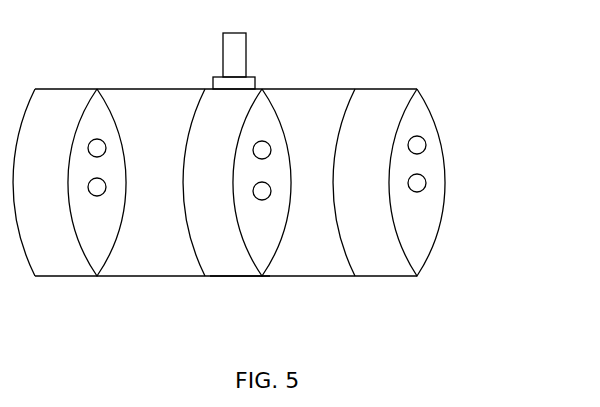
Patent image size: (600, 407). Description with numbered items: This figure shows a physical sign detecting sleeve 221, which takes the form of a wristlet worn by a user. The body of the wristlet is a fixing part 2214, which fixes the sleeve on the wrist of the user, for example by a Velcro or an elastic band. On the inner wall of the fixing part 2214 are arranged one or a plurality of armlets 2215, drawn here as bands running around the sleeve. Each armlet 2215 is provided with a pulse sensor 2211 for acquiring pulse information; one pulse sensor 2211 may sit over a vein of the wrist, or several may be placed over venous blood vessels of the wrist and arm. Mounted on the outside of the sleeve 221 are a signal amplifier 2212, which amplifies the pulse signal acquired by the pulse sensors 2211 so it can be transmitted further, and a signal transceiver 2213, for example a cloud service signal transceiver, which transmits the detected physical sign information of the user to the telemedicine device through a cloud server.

The physical sign detecting sleeve 221 is at (367, 80).
The pulse sensor 2211 is at (418, 181).
The signal amplifier 2212 is at (213, 85).
The signal transceiver 2213 is at (247, 58).
The fixing part 2214 is at (135, 265).
The armlet 2215 is at (240, 277).